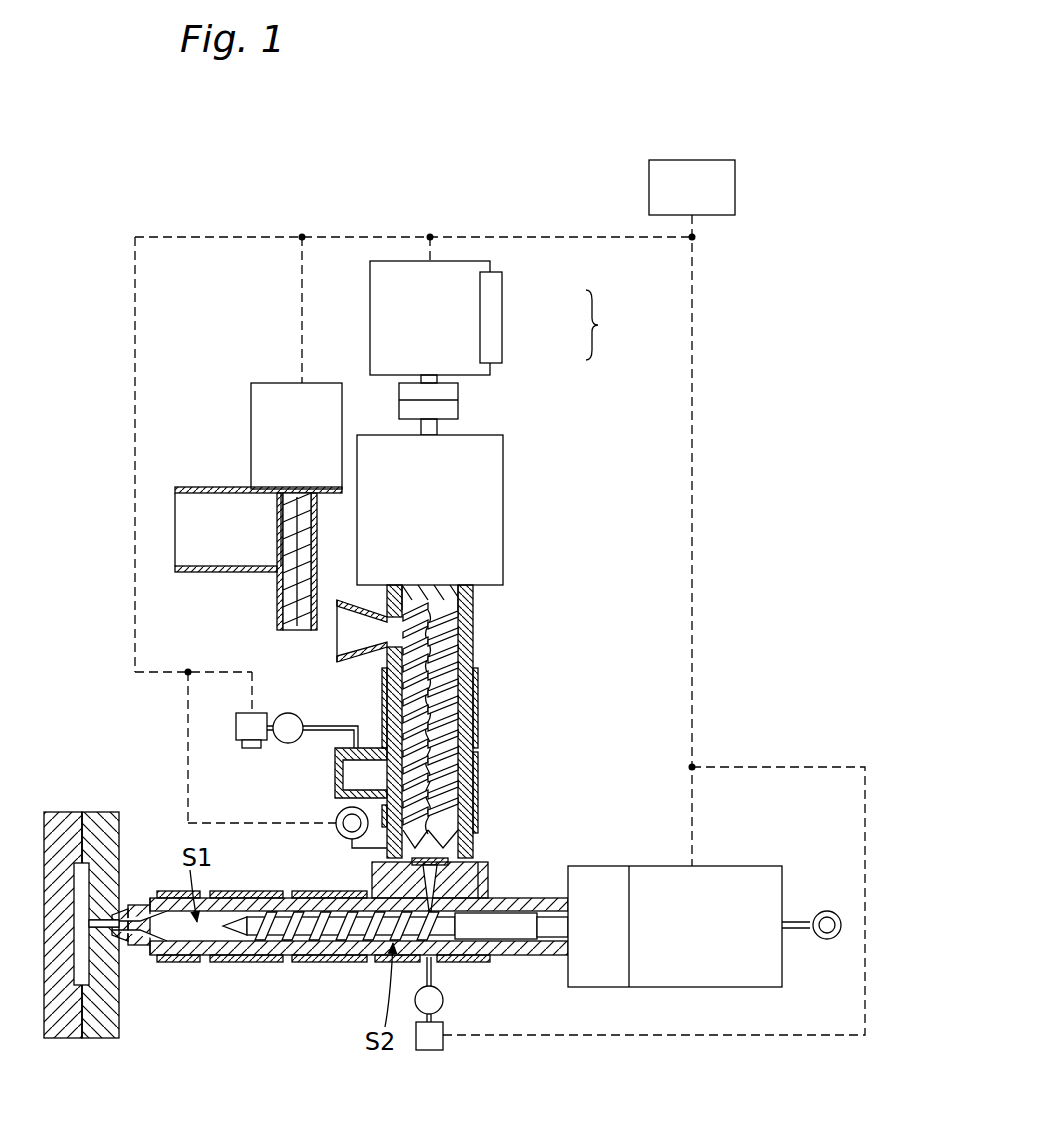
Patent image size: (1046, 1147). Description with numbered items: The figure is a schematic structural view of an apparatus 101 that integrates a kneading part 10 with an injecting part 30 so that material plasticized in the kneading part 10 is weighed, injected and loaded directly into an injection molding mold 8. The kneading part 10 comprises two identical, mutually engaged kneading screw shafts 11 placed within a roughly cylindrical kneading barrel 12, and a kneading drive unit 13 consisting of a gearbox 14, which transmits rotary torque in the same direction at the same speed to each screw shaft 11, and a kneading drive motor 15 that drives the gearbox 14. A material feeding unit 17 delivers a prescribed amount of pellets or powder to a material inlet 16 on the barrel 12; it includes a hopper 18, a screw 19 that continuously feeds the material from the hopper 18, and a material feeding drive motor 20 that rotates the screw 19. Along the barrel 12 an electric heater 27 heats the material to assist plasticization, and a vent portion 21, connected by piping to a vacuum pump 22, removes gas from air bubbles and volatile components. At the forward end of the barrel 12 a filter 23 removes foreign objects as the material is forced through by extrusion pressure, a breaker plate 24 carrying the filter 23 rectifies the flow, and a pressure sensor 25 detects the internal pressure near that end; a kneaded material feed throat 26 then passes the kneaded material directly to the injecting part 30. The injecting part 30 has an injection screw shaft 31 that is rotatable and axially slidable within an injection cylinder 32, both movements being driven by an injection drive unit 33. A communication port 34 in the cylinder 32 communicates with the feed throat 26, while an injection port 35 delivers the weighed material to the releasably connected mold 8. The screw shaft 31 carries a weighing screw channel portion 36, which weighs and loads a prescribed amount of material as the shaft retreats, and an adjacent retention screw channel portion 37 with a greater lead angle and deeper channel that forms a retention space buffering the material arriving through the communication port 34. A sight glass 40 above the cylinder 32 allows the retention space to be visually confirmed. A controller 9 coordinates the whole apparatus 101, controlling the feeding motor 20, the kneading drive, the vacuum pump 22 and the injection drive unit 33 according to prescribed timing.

The apparatus 101 is at (736, 129).
The kneading part 10 is at (486, 221).
The controller 9 is at (692, 187).
The material feeding unit 17 is at (212, 376).
The material feeding drive motor 20 is at (262, 443).
The hopper 18 is at (188, 537).
The screw 19 is at (278, 603).
The material inlet 16 is at (336, 645).
The kneading drive motor 15 is at (488, 323).
The gearbox 14 is at (503, 452).
The kneading drive unit 13 is at (608, 325).
The kneading screw shaft 11 is at (462, 640).
The kneading barrel 12 is at (467, 703).
The electric heater 27 is at (480, 772).
The vacuum pump 22 is at (236, 728).
The vent portion 21 is at (337, 773).
The pressure sensor 25 is at (336, 824).
The filter 23 is at (447, 858).
The breaker plate 24 is at (463, 872).
The kneaded material feed throat 26 is at (480, 881).
The sight glass 40 is at (372, 880).
The injection molding mold 8 is at (62, 1020).
The injection port 35 is at (140, 932).
The injection cylinder 32 is at (250, 950).
The weighing screw channel portion 36 is at (292, 962).
The injection screw shaft 31 is at (352, 943).
The communication port 34 is at (480, 936).
The retention screw channel portion 37 is at (462, 950).
The injection drive unit 33 is at (640, 972).
The injecting part 30 is at (700, 1050).